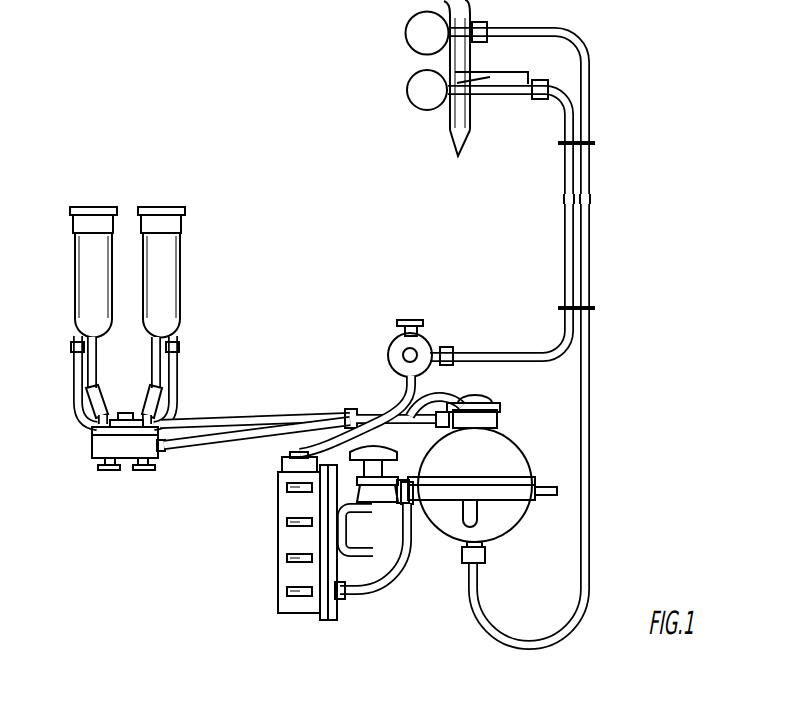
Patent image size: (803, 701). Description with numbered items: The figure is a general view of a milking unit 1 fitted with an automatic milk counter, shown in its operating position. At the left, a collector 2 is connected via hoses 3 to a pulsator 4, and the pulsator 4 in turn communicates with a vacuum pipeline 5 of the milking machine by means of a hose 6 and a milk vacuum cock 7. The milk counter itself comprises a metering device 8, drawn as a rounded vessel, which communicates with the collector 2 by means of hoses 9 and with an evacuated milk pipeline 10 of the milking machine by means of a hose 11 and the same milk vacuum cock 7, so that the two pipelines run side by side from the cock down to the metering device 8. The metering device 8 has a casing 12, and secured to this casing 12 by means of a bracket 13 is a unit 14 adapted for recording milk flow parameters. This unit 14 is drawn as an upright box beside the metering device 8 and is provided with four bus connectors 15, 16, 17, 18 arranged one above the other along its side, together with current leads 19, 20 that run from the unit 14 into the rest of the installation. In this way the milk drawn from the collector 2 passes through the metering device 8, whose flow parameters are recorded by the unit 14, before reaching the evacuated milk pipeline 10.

The milking unit 1 is at (85, 270).
The collector 2 is at (100, 446).
The hoses 3 is at (202, 416).
The pulsator 4 is at (388, 350).
The vacuum pipeline 5 is at (417, 91).
The hose 6 is at (565, 252).
The milk vacuum cock 7 is at (468, 124).
The metering device 8 is at (519, 436).
The hoses 9 is at (245, 433).
The evacuated milk pipeline 10 is at (406, 29).
The hose 11 is at (586, 364).
The casing 12 is at (510, 529).
The bracket 13 is at (375, 499).
The unit 14 is at (330, 620).
The bus connector 15 is at (285, 487).
The bus connector 16 is at (285, 522).
The bus connector 17 is at (285, 560).
The bus connector 18 is at (285, 592).
The current lead 19 is at (418, 407).
The current lead 20 is at (408, 553).